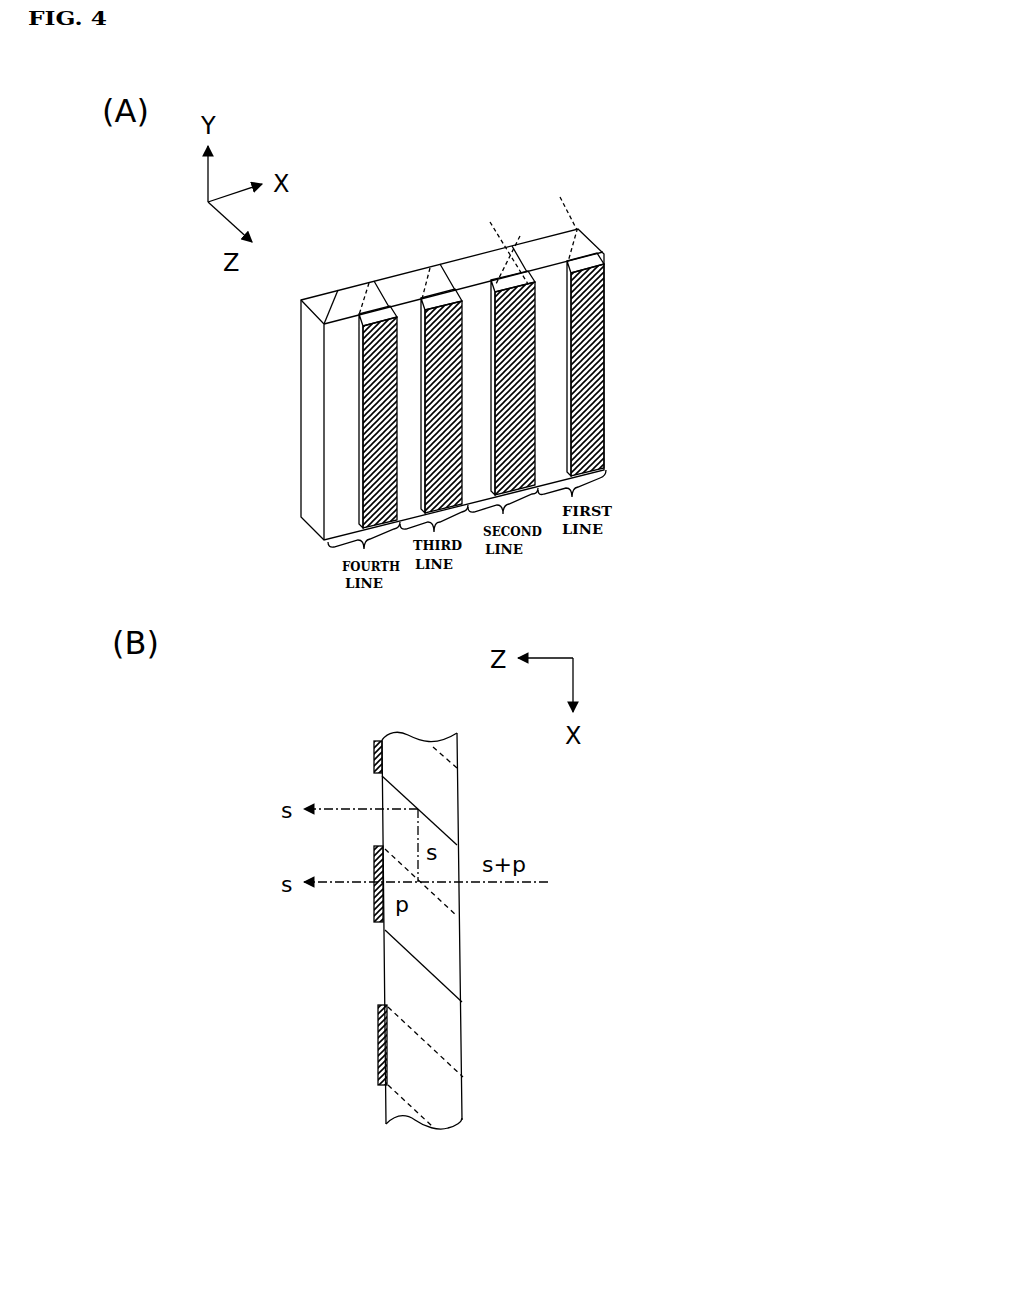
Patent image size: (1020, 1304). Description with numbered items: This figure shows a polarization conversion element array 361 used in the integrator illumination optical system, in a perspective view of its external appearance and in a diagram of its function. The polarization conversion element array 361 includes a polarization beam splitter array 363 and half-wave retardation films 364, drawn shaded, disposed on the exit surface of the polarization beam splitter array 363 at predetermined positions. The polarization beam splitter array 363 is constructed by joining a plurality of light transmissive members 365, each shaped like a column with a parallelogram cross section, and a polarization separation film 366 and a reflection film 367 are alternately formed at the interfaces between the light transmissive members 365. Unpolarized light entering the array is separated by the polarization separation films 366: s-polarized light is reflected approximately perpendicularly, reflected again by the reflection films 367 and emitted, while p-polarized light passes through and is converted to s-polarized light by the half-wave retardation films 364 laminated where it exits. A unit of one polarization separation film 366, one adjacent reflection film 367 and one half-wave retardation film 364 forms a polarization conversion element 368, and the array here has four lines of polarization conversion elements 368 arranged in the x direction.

The polarization conversion element array 361 is at (704, 251).
The polarization beam splitter array 363 is at (606, 238).
The λ/2 retardation film 364 is at (606, 442).
The light transmissive member 365 is at (415, 282).
The polarization separation film 366 is at (430, 268).
The reflection film 367 is at (393, 280).
The polarization conversion element 368 is at (560, 195).